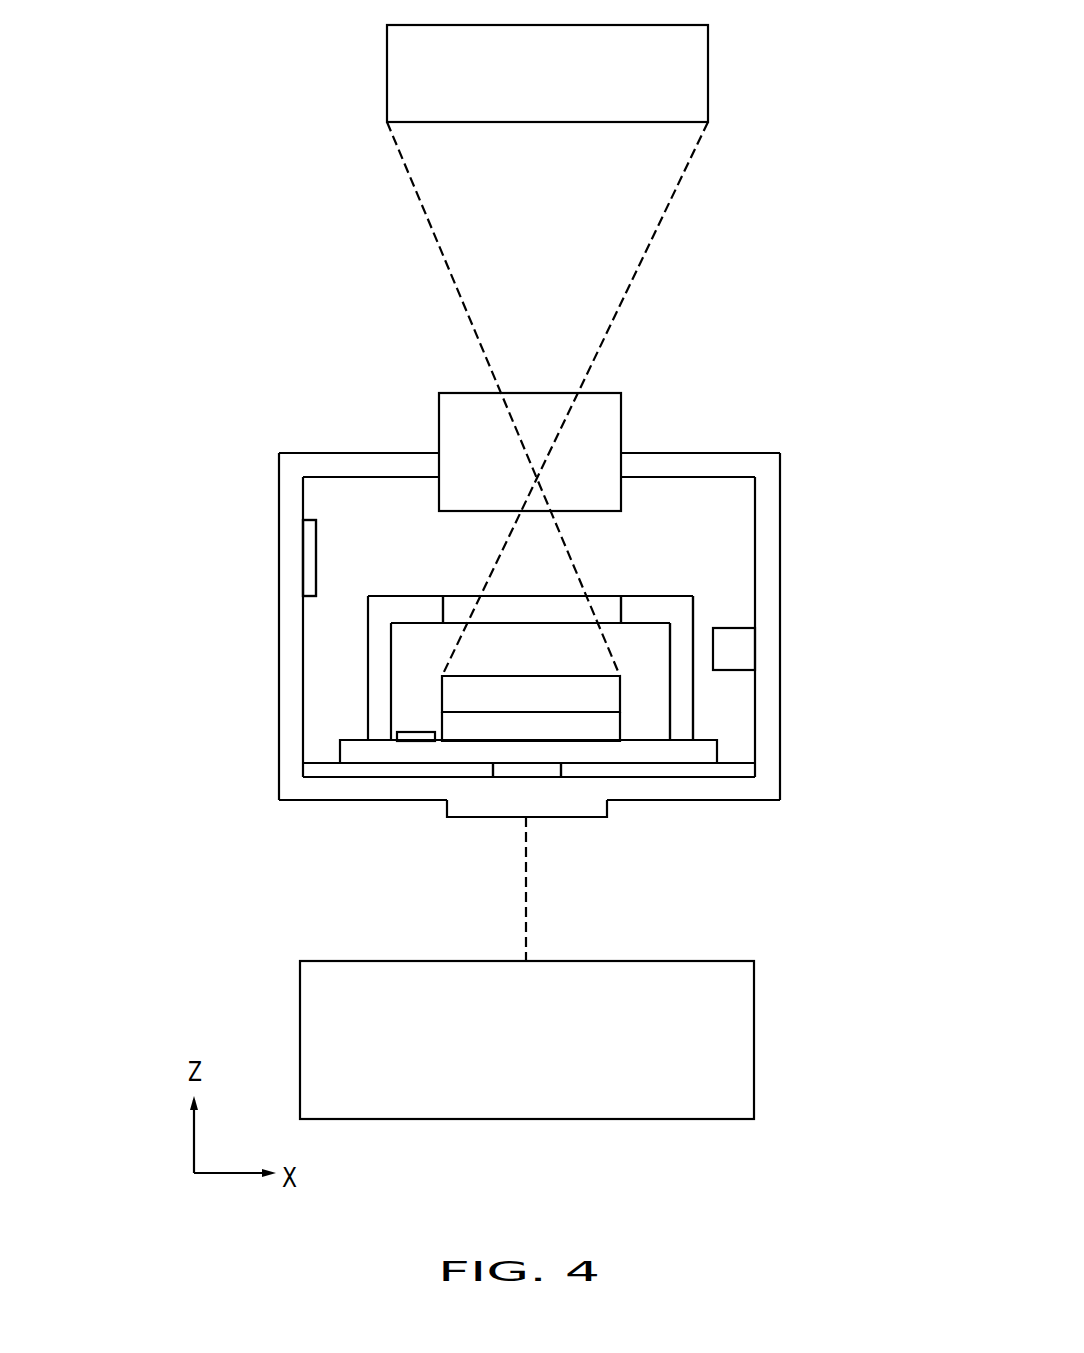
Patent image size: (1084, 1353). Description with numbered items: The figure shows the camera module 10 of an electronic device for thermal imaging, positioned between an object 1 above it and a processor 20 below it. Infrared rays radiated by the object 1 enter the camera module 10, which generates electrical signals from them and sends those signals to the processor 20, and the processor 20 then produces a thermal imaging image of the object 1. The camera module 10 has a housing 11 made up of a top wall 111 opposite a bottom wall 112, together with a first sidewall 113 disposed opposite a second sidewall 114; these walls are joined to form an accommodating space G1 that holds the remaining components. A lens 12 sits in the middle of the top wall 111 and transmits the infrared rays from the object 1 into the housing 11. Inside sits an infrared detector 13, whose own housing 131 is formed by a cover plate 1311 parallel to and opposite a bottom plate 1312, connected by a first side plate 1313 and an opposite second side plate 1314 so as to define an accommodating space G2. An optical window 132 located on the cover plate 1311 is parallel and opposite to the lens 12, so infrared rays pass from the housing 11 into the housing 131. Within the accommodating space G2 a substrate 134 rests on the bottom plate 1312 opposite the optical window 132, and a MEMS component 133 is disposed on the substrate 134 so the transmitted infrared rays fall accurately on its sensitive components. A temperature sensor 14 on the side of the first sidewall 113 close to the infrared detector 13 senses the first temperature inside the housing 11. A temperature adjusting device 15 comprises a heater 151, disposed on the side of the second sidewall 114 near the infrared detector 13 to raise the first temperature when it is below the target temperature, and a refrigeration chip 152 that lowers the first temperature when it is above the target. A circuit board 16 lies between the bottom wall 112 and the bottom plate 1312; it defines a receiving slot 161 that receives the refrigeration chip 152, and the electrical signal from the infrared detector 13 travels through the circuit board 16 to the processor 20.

The object 1 is at (693, 74).
The camera module 10 is at (826, 392).
The housing 11 is at (851, 422).
The top wall 111 is at (757, 452).
The bottom wall 112 is at (722, 788).
The first sidewall 113 is at (780, 501).
The second sidewall 114 is at (288, 514).
The lens 12 is at (621, 411).
The infrared detector 13 is at (710, 602).
The housing 131 is at (187, 597).
The cover plate 1311 is at (405, 610).
The bottom plate 1312 is at (378, 753).
The first side plate 1313 is at (378, 686).
The second side plate 1314 is at (683, 683).
The optical window 132 is at (610, 607).
The MEMS component 133 is at (603, 687).
The substrate 134 is at (602, 732).
The temperature sensor 14 is at (740, 647).
The temperature adjusting device 15 is at (131, 552).
The heater 151 is at (310, 565).
The refrigeration chip 152 is at (507, 770).
The circuit board 16 is at (597, 770).
The receiving slot 161 is at (553, 770).
The processor 20 is at (726, 1064).
The accommodating space G1 is at (345, 497).
The accommodating space G2 is at (651, 745).